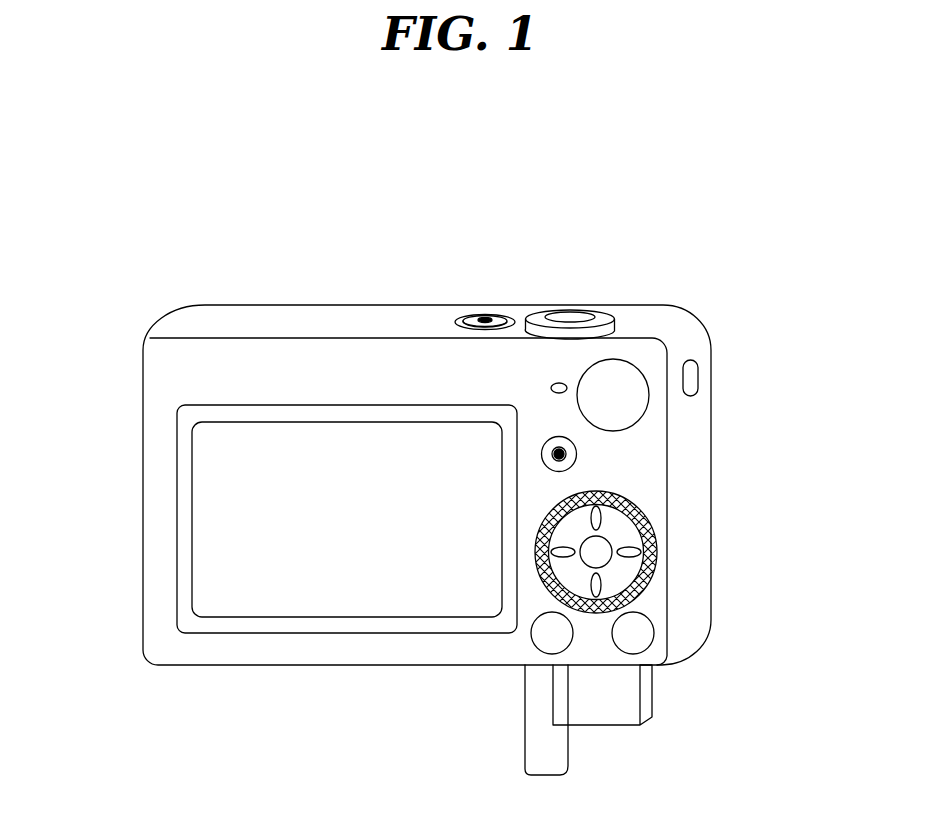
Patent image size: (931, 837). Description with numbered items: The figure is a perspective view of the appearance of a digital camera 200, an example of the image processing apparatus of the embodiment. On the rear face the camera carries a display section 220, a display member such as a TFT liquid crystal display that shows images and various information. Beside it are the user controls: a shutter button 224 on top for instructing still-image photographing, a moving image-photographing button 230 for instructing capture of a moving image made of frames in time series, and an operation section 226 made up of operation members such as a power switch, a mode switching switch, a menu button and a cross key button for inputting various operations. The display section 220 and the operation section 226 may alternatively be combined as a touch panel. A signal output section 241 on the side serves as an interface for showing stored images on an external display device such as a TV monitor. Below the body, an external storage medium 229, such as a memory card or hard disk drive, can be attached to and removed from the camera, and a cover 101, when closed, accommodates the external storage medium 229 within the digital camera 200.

The cover 101 is at (568, 757).
The digital camera 200 is at (343, 303).
The display section 220 is at (207, 500).
The shutter button 224 is at (568, 313).
The operation section 226 is at (525, 328).
The external storage medium 229 is at (627, 697).
The moving image-photographing button 230 is at (577, 452).
The signal output section 241 is at (698, 380).